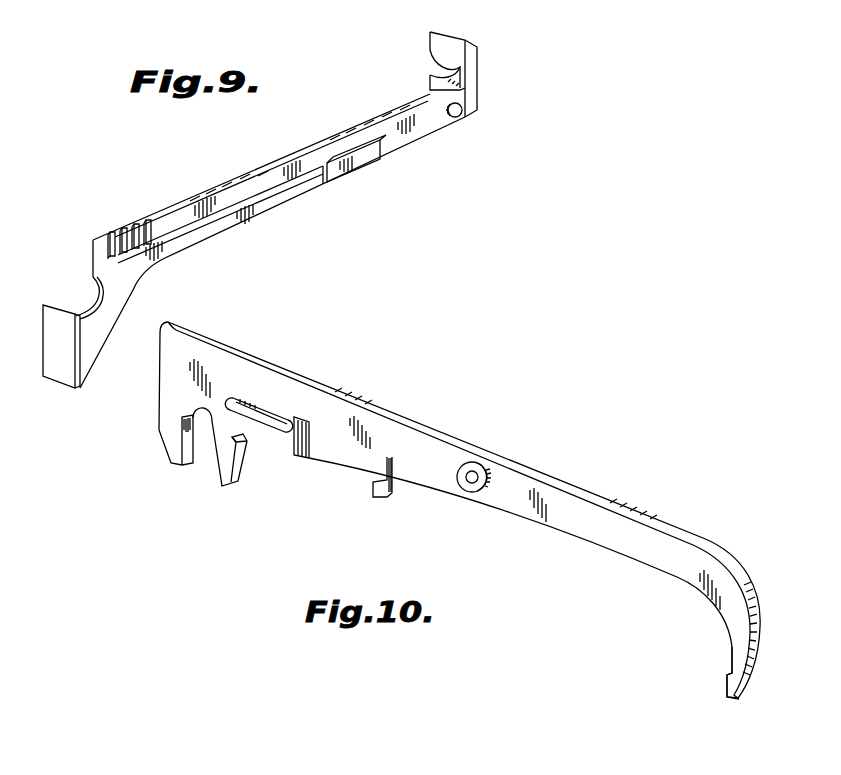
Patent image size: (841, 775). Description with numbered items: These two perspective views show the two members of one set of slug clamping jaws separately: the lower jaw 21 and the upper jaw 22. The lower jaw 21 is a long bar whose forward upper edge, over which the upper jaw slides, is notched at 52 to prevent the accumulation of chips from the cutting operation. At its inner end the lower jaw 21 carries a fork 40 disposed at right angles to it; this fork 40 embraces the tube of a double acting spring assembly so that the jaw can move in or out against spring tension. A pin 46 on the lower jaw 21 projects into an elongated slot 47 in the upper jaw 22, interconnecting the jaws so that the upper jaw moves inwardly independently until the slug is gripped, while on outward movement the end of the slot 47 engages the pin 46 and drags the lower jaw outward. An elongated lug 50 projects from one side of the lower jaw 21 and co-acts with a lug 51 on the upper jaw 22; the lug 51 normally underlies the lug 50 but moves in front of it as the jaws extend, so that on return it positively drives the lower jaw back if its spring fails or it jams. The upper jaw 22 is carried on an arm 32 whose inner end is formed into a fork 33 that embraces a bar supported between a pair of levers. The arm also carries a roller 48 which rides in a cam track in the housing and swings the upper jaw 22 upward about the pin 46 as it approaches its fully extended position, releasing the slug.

In FIG. 9, the lower jaw 21 is at (93, 339).
In FIG. 9, the notched edge 52 is at (137, 228).
In FIG. 9, the elongated lug 50 is at (355, 160).
In FIG. 9, the fork 40 is at (433, 44).
In FIG. 9, the pin 46 is at (462, 117).
In FIG. 10, the arm 32 is at (408, 420).
In FIG. 10, the fork 33 is at (190, 464).
In FIG. 10, the elongated slot 47 is at (278, 433).
In FIG. 10, the co-acting lug 51 is at (378, 497).
In FIG. 10, the roller 48 is at (480, 458).
In FIG. 10, the upper jaw 22 is at (742, 647).